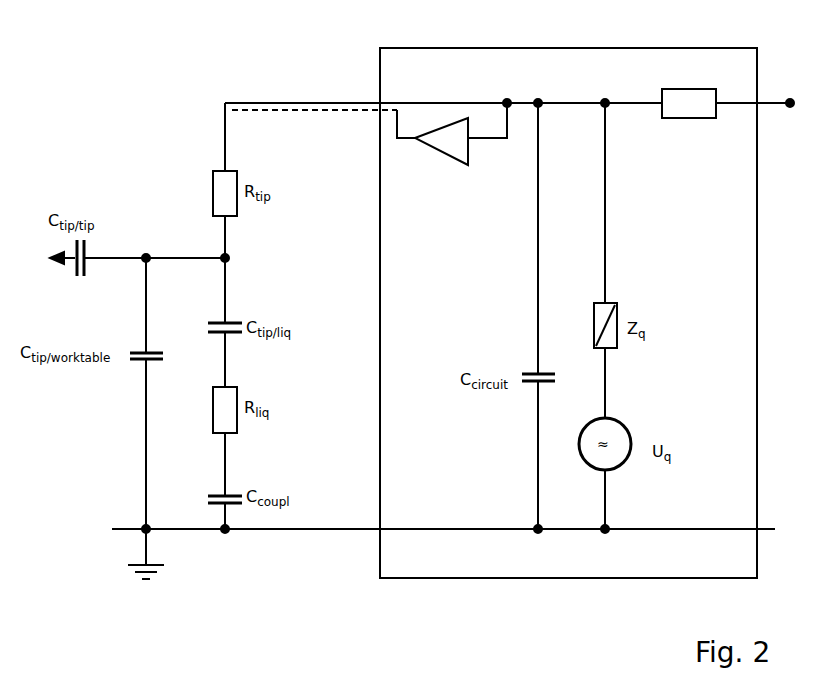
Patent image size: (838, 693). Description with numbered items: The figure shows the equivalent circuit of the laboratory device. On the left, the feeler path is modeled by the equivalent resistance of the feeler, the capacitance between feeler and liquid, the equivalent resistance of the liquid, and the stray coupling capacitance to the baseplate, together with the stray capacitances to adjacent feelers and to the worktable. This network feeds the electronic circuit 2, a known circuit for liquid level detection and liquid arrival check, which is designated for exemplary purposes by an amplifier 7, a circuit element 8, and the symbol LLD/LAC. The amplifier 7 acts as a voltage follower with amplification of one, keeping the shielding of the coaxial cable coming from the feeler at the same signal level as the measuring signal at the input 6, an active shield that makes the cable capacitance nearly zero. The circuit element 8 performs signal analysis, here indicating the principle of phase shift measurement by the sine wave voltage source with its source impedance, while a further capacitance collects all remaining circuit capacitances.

The electronic circuit 2 is at (742, 323).
The input of the comparator 6 is at (357, 86).
The amplifier 7 is at (447, 145).
The circuit element 8 is at (681, 88).